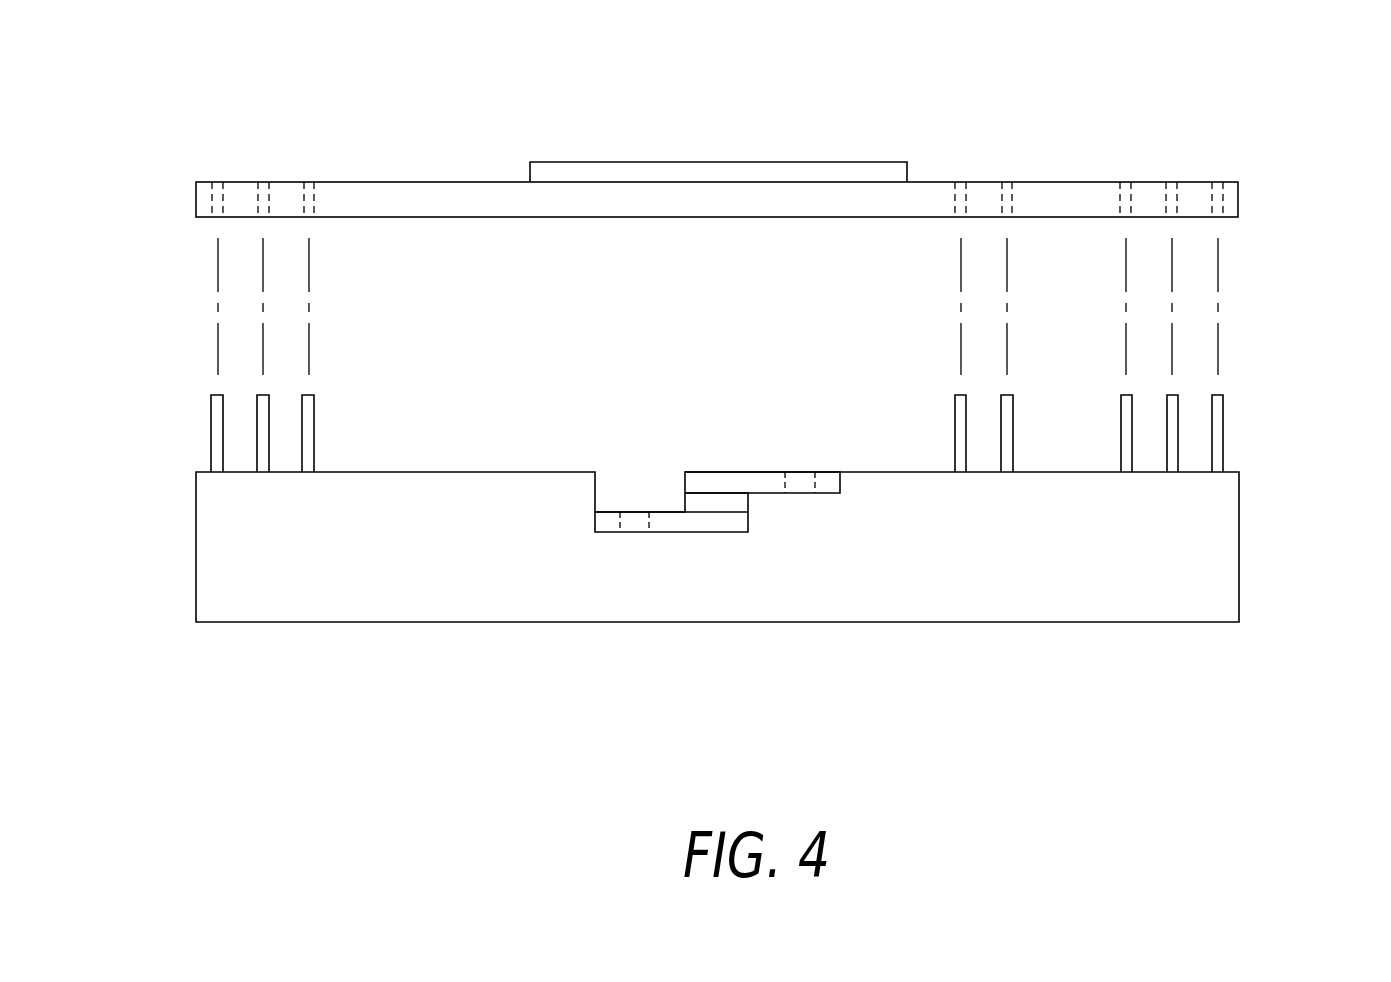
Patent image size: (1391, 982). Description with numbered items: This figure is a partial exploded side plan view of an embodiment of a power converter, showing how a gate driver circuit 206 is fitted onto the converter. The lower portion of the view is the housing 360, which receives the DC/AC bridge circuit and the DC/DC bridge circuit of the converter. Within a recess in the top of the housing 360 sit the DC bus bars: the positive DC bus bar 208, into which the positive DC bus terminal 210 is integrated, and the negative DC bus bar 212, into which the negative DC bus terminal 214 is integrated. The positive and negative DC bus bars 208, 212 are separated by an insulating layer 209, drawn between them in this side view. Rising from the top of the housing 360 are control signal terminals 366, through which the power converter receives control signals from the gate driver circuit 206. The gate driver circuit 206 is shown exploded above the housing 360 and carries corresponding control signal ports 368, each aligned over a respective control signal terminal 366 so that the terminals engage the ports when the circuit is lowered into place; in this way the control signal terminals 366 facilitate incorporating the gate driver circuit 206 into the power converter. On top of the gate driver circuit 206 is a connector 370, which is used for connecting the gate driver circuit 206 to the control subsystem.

The gate driver circuit 206 is at (1084, 182).
The positive DC bus bar 208 is at (703, 482).
The insulating layer 209 is at (737, 500).
The positive DC bus terminal 210 is at (798, 480).
The negative DC bus bar 212 is at (723, 520).
The negative DC bus terminal 214 is at (632, 520).
The housing 360 is at (196, 545).
The control signal terminals 366 is at (308, 405).
The control signal ports 368 is at (305, 182).
The connector 370 is at (658, 162).